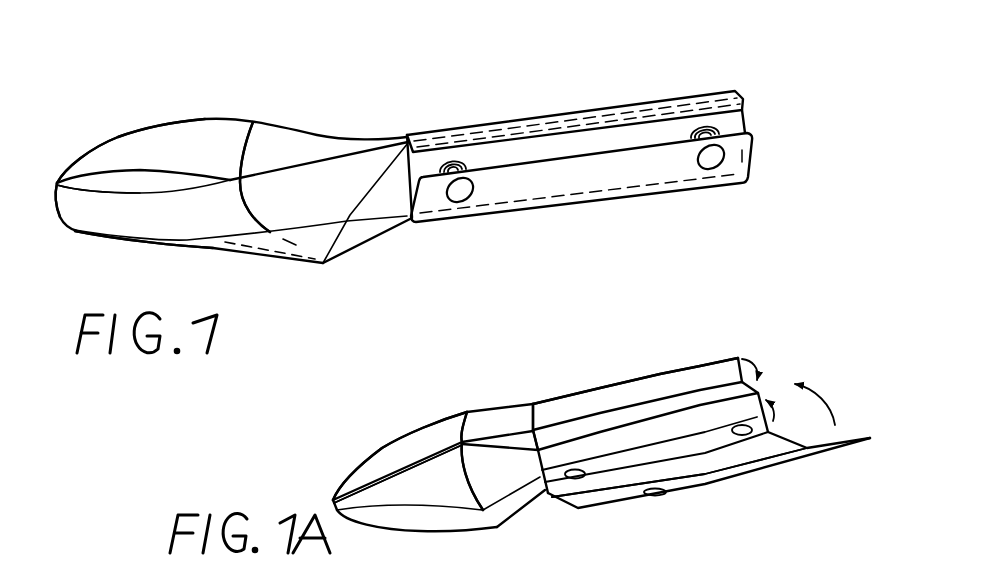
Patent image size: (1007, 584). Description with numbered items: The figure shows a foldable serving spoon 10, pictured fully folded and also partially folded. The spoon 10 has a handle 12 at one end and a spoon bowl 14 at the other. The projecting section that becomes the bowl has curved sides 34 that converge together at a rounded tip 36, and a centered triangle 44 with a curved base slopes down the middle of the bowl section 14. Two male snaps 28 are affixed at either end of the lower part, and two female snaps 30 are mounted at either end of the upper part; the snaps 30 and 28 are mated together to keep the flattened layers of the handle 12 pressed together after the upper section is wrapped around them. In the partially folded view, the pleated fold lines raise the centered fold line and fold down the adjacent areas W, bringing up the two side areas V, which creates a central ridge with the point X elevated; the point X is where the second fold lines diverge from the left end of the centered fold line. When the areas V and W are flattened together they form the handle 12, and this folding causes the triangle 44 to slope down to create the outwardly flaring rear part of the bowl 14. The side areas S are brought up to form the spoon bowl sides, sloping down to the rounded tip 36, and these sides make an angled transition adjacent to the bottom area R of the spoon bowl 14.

In FIG. 1, the foldable serving spoon 10 is at (564, 11).
In FIG. 1, the handle 12 is at (565, 186).
In FIG. 1, the spoon bowl 14 is at (216, 120).
In FIG. 1, the male snaps 28 is at (463, 197).
In FIG. 1, the female snaps 30 is at (452, 163).
In FIG. 1, the curved sides 34 is at (145, 127).
In FIG. 1, the rounded tip 36 is at (55, 210).
In FIG. 1, the centered triangle 44 is at (310, 182).
In FIG. 1A, the centered triangle 44 is at (483, 467).
In FIG. 1, the bottom area R is at (113, 210).
In FIG. 1A, the bottom area R is at (422, 502).
In FIG. 1A, the side areas S is at (413, 448).
In FIG. 1A, the point X is at (540, 450).
In FIG. 1A, the adjacent areas W is at (580, 423).
In FIG. 1A, the side areas V is at (633, 395).